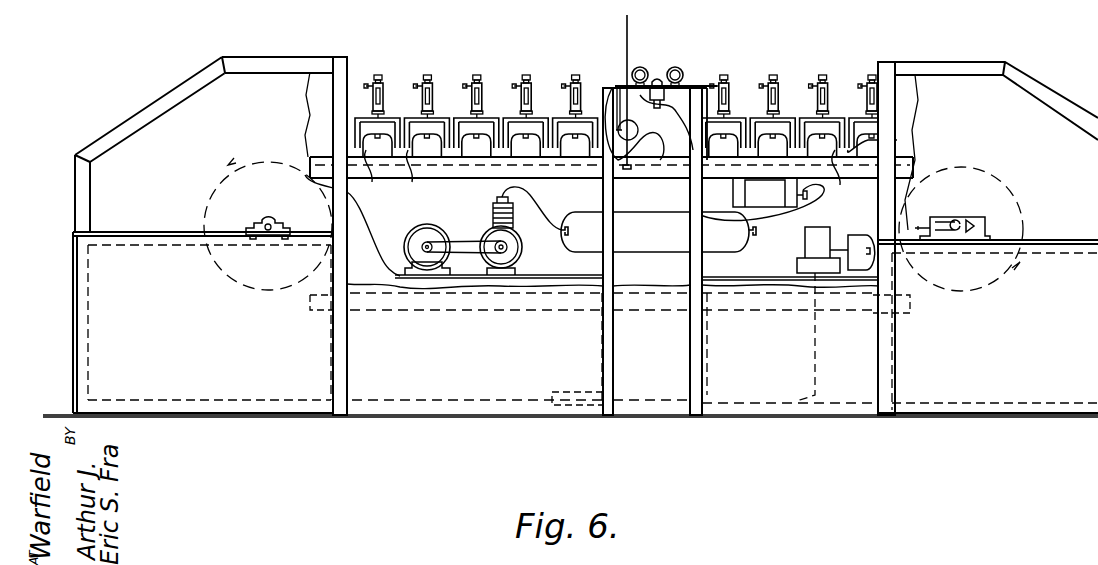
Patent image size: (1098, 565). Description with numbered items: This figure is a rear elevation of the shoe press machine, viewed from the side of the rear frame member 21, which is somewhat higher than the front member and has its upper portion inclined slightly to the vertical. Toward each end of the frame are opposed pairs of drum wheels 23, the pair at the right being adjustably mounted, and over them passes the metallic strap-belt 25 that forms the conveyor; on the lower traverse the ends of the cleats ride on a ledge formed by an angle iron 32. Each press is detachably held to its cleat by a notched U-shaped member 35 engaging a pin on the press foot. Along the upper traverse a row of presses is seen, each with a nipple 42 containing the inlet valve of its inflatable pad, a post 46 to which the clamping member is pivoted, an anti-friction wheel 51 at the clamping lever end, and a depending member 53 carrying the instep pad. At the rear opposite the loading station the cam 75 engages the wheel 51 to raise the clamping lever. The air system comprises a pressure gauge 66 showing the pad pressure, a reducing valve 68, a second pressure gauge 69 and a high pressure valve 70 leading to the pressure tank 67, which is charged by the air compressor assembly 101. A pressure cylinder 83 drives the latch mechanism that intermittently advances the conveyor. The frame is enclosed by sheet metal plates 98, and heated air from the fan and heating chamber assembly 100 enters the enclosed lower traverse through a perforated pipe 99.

The rear frame member 21 is at (572, 166).
The drum wheels 23 is at (215, 270).
The strap-belt 25 is at (925, 296).
The angle iron 32 is at (428, 300).
The U-shaped member 35 is at (413, 180).
The nipple 42 is at (370, 180).
The post 46 is at (470, 105).
The anti-friction wheel 51 is at (468, 113).
The depending member 53 is at (426, 79).
The pressure gauge 66 is at (678, 67).
The pressure tank 67 is at (658, 232).
The reducing valve 68 is at (658, 78).
The second pressure gauge 69 is at (641, 66).
The high pressure valve 70 is at (622, 84).
The cam 75 is at (703, 86).
The pressure cylinder 83 is at (762, 199).
The sheet metal plates 98 is at (107, 197).
The perforated pipe 99 is at (738, 396).
The fan and heating chamber assembly 100 is at (843, 241).
The air compressor assembly 101 is at (476, 226).